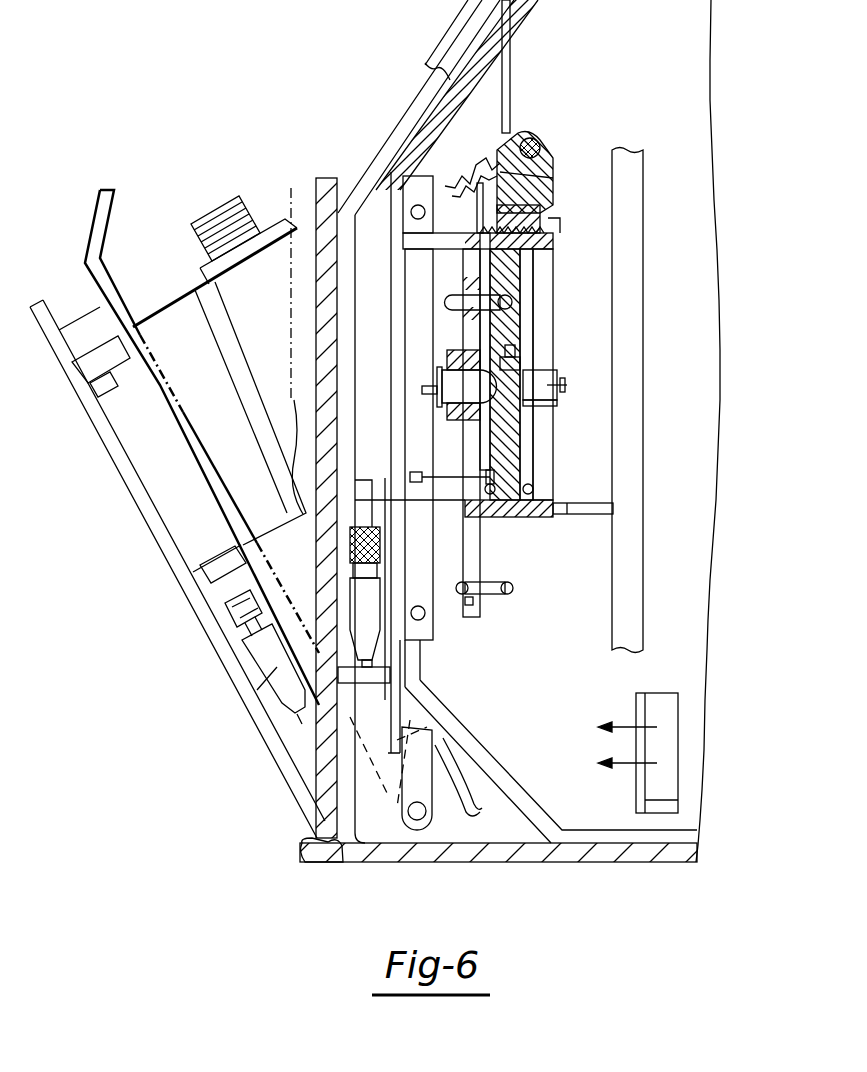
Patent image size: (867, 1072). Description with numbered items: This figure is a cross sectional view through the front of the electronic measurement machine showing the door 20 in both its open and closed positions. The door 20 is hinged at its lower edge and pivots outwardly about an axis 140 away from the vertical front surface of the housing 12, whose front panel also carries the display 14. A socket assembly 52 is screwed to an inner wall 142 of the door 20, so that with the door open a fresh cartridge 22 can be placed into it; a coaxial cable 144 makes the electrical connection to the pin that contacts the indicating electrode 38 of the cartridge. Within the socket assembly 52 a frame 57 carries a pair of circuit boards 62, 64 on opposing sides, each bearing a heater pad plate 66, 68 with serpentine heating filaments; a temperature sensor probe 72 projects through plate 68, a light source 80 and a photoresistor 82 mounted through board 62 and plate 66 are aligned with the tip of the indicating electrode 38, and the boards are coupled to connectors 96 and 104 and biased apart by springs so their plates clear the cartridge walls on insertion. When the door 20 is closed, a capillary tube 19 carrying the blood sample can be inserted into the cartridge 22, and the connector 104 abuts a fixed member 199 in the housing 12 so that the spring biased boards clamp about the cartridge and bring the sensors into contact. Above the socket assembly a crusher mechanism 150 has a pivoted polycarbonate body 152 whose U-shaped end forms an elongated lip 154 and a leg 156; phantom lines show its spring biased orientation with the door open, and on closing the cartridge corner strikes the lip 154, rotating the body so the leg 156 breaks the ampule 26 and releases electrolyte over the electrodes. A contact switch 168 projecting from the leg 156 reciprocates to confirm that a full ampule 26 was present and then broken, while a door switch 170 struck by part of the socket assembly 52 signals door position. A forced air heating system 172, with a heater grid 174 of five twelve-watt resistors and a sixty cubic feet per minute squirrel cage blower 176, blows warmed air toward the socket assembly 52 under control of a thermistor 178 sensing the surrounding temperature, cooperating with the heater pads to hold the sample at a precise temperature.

The housing 12 is at (552, 866).
The display 14 is at (448, 480).
The capillary tube 19 is at (523, 360).
The door 20 is at (143, 523).
The cartridge 22 is at (525, 310).
The ampule 26 is at (560, 215).
The indicating electrode 38 is at (548, 402).
The socket assembly 52 is at (548, 540).
The frame 57 is at (252, 339).
The circuit board 62 is at (548, 282).
The circuit board 64 is at (480, 555).
The heater pad plate 66 is at (548, 256).
The heater pad plate 68 is at (199, 307).
The temperature sensor probe 72 is at (458, 312).
The light source 80 is at (443, 400).
The photoresistor 82 is at (560, 372).
The connector 96 is at (415, 305).
The connector 104 is at (605, 388).
The axis 140 is at (413, 813).
The inner wall 142 is at (187, 450).
The coaxial cable 144 is at (262, 668).
The crusher mechanism 150 is at (533, 112).
The body 152 is at (553, 150).
The lip 154 is at (548, 225).
The leg 156 is at (478, 160).
The contact switch 168 is at (450, 188).
The door switch 170 is at (580, 516).
The forced air heating system 172 is at (662, 706).
The heater grid 174 is at (645, 693).
The squirrel cage blower 176 is at (672, 774).
The thermistor 178 is at (490, 596).
The fixed member 199 is at (630, 445).